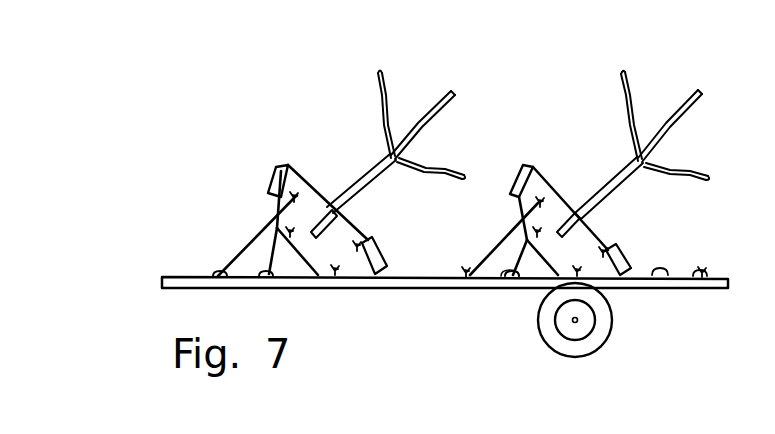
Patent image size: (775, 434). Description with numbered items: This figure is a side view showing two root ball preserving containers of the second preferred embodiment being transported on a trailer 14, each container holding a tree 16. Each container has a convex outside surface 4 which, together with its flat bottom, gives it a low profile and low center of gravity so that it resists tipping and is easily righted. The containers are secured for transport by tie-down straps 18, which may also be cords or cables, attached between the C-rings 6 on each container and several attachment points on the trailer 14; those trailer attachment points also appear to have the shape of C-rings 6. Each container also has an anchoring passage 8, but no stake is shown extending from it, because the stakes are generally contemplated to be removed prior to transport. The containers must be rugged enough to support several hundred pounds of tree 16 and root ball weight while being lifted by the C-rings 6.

The convex outside surface 4 is at (540, 181).
The C-ring 6 is at (299, 190).
The anchoring passage 8 is at (282, 165).
The trailer 14 is at (177, 277).
The tree 16 is at (447, 103).
The tie-down strap 18 is at (251, 239).